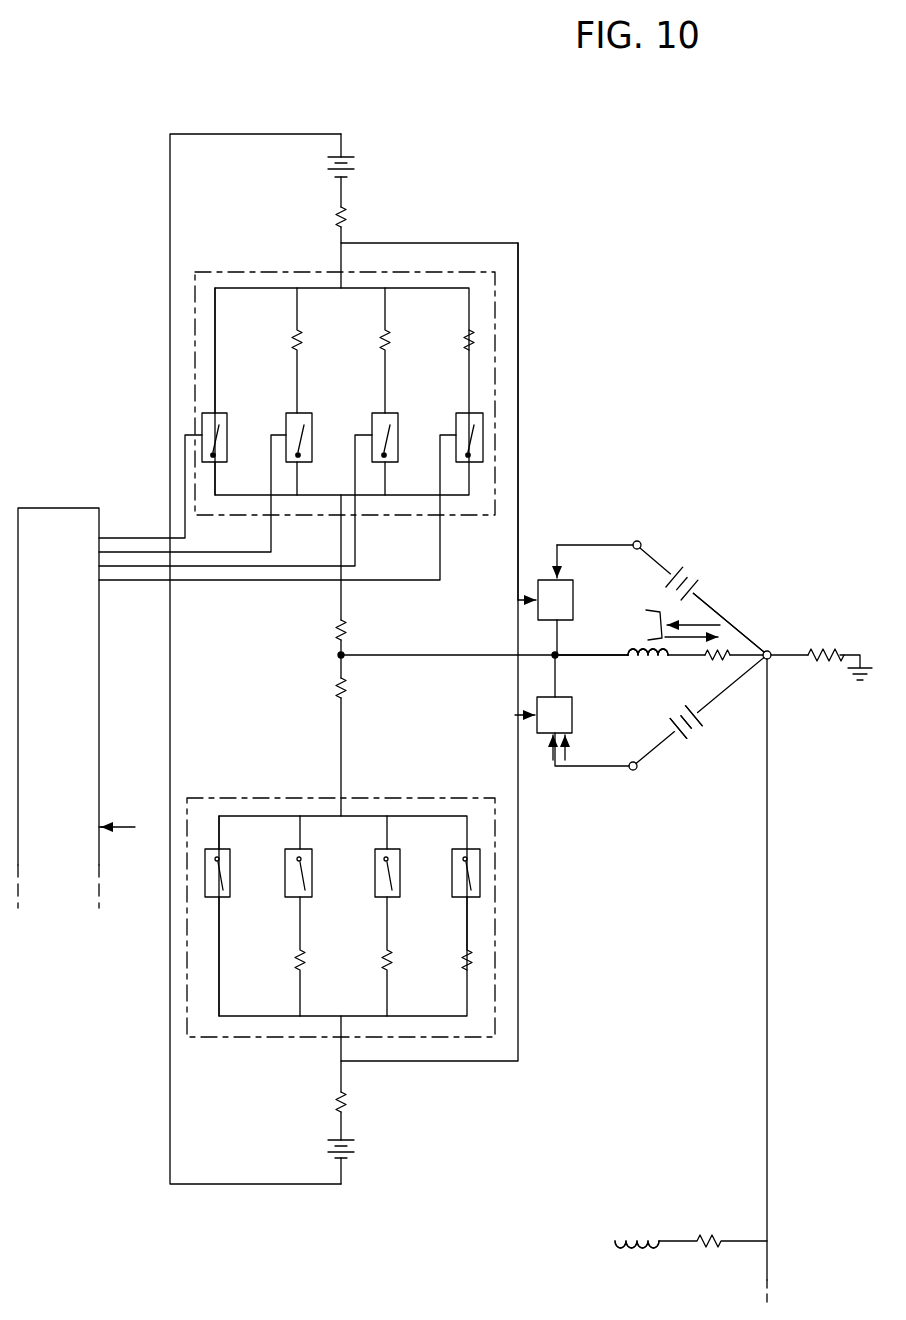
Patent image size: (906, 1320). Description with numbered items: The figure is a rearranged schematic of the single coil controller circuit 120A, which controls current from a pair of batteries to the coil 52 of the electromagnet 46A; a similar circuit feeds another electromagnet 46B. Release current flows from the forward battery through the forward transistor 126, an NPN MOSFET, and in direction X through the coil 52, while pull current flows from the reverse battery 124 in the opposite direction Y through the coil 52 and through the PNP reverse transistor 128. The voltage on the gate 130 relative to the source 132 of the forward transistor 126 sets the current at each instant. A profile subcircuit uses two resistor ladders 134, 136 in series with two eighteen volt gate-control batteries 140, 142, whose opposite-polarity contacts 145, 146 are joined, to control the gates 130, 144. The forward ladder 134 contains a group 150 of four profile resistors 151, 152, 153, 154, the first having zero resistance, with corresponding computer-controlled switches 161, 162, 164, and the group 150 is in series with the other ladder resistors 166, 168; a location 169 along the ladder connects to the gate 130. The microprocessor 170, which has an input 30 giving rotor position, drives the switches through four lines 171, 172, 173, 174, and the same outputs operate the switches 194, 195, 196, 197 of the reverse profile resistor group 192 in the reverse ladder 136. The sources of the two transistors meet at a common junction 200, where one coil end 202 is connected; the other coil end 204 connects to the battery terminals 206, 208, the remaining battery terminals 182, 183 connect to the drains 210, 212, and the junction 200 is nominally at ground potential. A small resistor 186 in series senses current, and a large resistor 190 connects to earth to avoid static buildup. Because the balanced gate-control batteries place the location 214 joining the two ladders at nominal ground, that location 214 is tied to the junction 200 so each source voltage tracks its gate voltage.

The location along the resistor ladder 169 is at (340, 243).
The ladder resistor 166 is at (338, 216).
The voltage contact 145 is at (343, 150).
The gate-control battery 140 is at (363, 147).
The group of profile resistors 150 is at (431, 262).
The single coil controller circuit 120A is at (528, 211).
The resistor ladder 134 is at (277, 232).
The profile resistor 151 is at (215, 370).
The profile resistor 152 is at (294, 343).
The profile resistor 153 is at (382, 332).
The profile resistor 154 is at (466, 335).
The first switch 161 is at (215, 437).
The switch 162 is at (298, 437).
The switch 164 is at (386, 437).
The microprocessor output line 171 is at (160, 538).
The microprocessor output line 172 is at (143, 552).
The microprocessor output line 173 is at (128, 566).
The microprocessor output line 174 is at (112, 580).
The microprocessor 170 is at (102, 739).
The input 30 is at (120, 830).
The gate 130 is at (523, 600).
The MOSFET drain 210 is at (548, 576).
The forward transistor 126 is at (566, 578).
The source 132 is at (571, 630).
The battery terminal 182 is at (641, 545).
The voltage terminal 206 is at (707, 600).
The reverse profile resistor group / MOSFET source 192 is at (535, 703).
The ladder resistor 168 is at (335, 632).
The location where the resistor ladders are connected 214 is at (338, 658).
The common junction 200 is at (550, 660).
The coil end 202 is at (630, 658).
The electromagnet 46A is at (650, 647).
The coil 52 is at (650, 663).
The small resistor 186 is at (745, 668).
The large resistor 190 is at (812, 658).
The voltage terminal 208 is at (723, 730).
The coil end 204 is at (682, 718).
The reverse battery 124 is at (767, 785).
The battery terminal 183 is at (636, 770).
The reverse transistor 128 is at (555, 745).
The MOSFET drain 212 is at (566, 745).
The gate 144 is at (520, 722).
The reverse resistance ladder 136 is at (290, 1070).
The switch 194 is at (222, 897).
The switch 195 is at (303, 897).
The switch 196 is at (390, 897).
The switch 197 is at (478, 897).
The voltage contact 146 is at (338, 1163).
The gate-control battery 142 is at (358, 1161).
The electromagnet 46B is at (668, 1205).